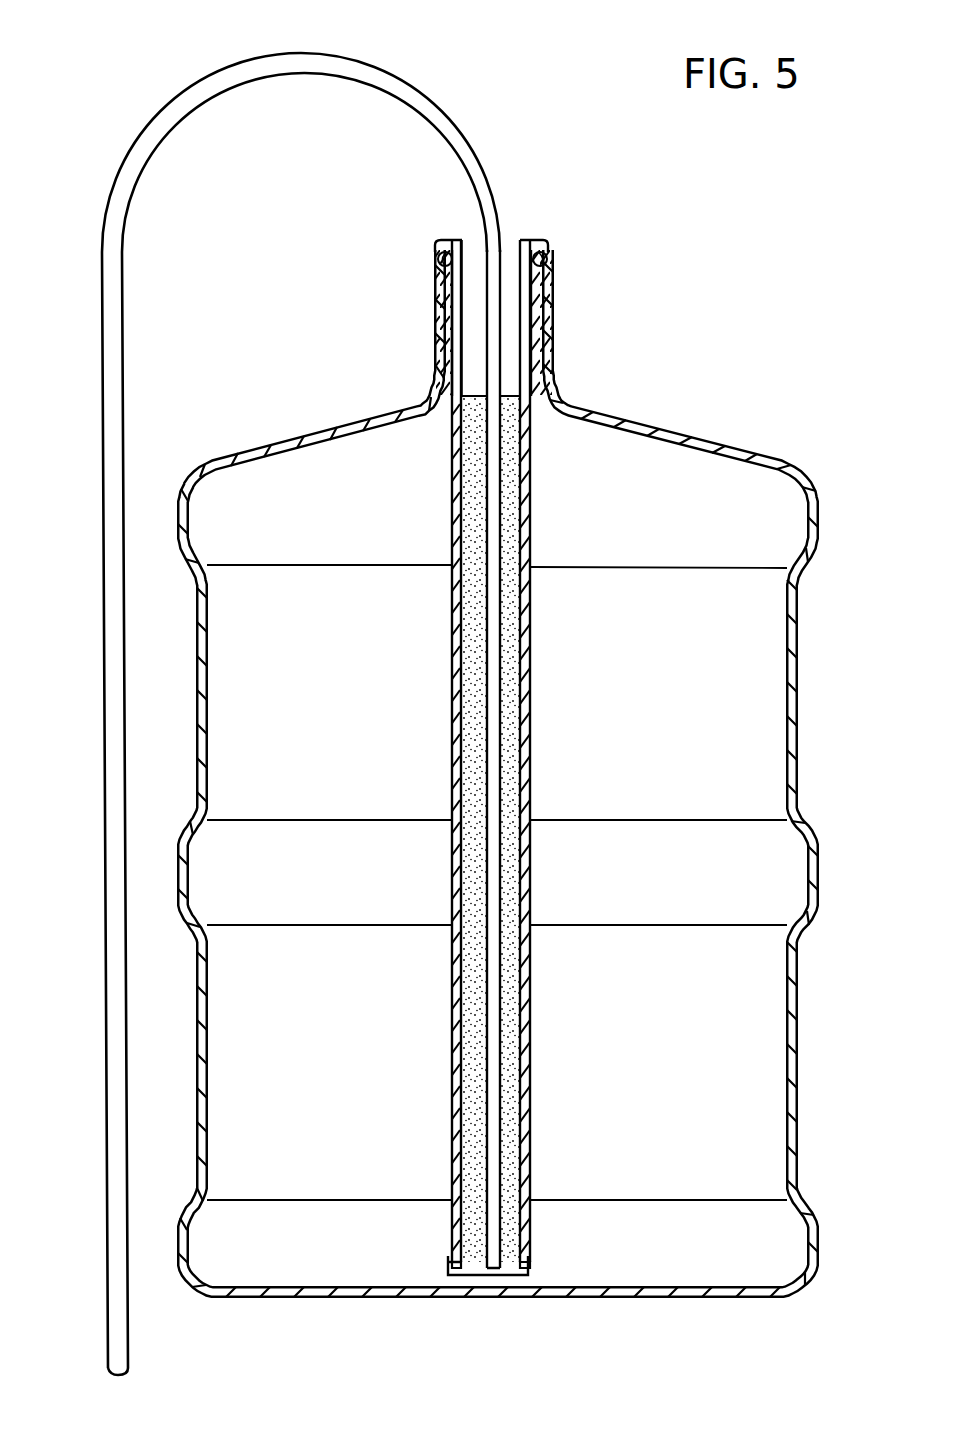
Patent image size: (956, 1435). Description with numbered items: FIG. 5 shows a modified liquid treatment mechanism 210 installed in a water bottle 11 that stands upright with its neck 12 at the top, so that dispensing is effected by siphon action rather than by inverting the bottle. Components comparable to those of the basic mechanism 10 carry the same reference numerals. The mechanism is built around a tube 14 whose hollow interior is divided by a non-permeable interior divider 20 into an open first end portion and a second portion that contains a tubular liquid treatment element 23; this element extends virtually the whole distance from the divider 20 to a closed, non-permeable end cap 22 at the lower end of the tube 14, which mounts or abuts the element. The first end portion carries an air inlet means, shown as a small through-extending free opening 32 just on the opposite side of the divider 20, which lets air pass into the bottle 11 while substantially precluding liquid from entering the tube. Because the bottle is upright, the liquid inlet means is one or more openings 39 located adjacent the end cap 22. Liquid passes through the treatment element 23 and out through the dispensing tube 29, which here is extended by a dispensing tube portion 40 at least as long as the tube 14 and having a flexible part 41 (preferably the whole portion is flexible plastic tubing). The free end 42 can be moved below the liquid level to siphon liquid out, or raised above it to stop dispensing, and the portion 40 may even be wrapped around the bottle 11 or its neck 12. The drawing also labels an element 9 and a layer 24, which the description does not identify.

The tube 9 is at (517, 242).
The liquid treatment mechanism 10 is at (457, 101).
The water bottle 11 is at (548, 240).
The neck 12 is at (546, 364).
The tube 14 is at (531, 740).
The interior divider 20 is at (520, 396).
The closed end cap 22 is at (478, 1278).
The liquid treatment element 23 is at (512, 486).
The filter medium 24 is at (487, 726).
The dispensing tube 29 is at (490, 308).
The air inlet opening 32 is at (455, 392).
The liquid inlet openings 39 is at (530, 1262).
The dispensing tube portion 40 is at (103, 258).
The flexible part 41 is at (306, 52).
The free end 42 is at (120, 1360).
The liquid treatment mechanism 210 is at (540, 646).